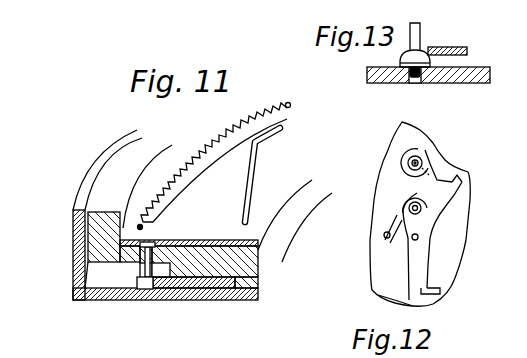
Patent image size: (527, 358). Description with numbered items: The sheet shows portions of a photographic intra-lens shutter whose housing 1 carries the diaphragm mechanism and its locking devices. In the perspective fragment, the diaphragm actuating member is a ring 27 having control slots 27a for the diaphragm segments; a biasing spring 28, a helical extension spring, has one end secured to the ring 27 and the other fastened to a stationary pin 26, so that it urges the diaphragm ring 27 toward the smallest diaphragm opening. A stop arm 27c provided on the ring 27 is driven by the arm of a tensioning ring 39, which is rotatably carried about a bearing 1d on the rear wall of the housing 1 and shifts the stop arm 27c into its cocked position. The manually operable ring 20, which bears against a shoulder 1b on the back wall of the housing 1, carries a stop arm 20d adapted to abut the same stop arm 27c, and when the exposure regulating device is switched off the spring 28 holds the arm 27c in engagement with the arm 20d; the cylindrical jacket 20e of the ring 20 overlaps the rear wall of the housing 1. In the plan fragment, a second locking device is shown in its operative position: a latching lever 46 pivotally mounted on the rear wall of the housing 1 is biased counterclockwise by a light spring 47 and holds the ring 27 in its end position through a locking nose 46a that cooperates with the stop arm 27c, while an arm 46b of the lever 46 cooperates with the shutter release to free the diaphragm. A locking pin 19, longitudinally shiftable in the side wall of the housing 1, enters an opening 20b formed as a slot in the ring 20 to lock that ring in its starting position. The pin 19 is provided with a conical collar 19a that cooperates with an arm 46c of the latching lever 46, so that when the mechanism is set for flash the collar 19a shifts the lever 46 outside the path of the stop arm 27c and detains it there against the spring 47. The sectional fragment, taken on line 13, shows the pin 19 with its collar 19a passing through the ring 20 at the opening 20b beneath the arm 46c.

In FIG. 11, the housing 1 is at (122, 168).
In FIG. 12, the housing 1 is at (388, 175).
In FIG. 11, the shoulder 1b is at (247, 298).
In FIG. 11, the bearing 1d is at (238, 283).
In FIG. 12, the section line 13 is at (371, 124).
In FIG. 13, the locking pin 19 is at (419, 36).
In FIG. 12, the locking pin 19 is at (423, 160).
In FIG. 13, the conical collar 19a is at (401, 61).
In FIG. 12, the conical collar 19a is at (418, 150).
In FIG. 11, the manually operable ring 20 is at (93, 300).
In FIG. 13, the manually operable ring 20 is at (457, 84).
In FIG. 13, the opening 20b is at (410, 82).
In FIG. 11, the stop arm 20d is at (140, 300).
In FIG. 11, the cylindrical jacket 20e is at (77, 246).
In FIG. 11, the stationary pin 26 is at (288, 102).
In FIG. 11, the diaphragm actuating ring 27 is at (205, 214).
In FIG. 11, the control slots 27a is at (257, 173).
In FIG. 11, the stop arm 27c is at (163, 300).
In FIG. 12, the stop arm 27c is at (441, 291).
In FIG. 11, the biasing spring 28 is at (222, 134).
In FIG. 11, the ring 39 is at (208, 297).
In FIG. 12, the latching lever 46 is at (432, 205).
In FIG. 12, the locking nose 46a is at (420, 295).
In FIG. 12, the arm 46b is at (452, 186).
In FIG. 13, the arm 46c is at (449, 47).
In FIG. 12, the arm 46c is at (432, 170).
In FIG. 12, the spring 47 is at (396, 226).